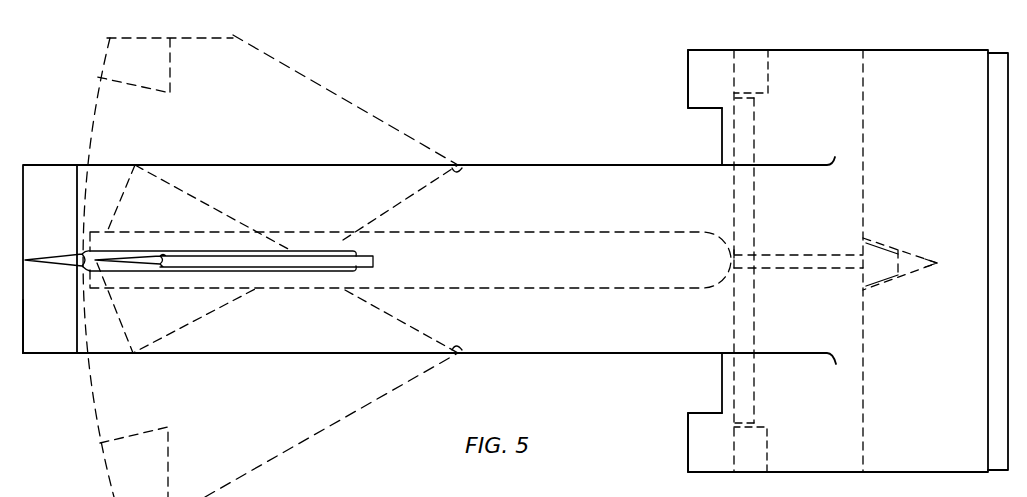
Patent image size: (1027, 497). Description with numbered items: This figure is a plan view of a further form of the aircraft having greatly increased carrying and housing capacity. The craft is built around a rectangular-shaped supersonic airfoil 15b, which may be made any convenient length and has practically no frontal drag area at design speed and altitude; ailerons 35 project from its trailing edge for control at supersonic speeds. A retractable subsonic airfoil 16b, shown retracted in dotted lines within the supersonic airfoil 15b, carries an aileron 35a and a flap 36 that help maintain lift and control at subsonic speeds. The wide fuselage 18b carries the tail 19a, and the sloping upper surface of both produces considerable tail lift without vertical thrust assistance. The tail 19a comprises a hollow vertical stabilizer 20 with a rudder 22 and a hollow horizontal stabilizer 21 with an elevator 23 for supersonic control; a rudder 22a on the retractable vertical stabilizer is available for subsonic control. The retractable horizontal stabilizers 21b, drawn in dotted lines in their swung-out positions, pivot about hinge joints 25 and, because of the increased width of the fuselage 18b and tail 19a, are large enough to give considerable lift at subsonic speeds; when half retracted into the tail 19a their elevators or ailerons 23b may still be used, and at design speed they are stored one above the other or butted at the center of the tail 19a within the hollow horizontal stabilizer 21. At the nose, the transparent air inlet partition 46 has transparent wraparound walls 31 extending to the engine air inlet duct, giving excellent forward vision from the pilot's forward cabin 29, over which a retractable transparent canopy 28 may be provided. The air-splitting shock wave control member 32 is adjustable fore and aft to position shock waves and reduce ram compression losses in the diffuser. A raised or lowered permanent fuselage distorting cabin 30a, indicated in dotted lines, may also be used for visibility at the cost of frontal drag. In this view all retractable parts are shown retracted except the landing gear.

The rectangular-shaped supersonic airfoil 15b is at (952, 54).
The retractable subsonic airfoil 16b is at (863, 109).
The fuselage 18b is at (585, 355).
The tail 19a is at (318, 204).
The hollow vertical stabilizer 20 is at (226, 252).
The hollow horizontal stabilizer 21 is at (266, 356).
The retractable horizontal stabilizer 21b is at (335, 97).
The rudder 22 is at (64, 253).
The rudder 22a is at (157, 255).
The elevator 23 is at (60, 356).
The elevator or aileron 23b is at (100, 60).
The hinge joint 25 is at (455, 170).
The retractable transparent canopy 28 is at (876, 242).
The pilot's forward cabin 29 is at (884, 286).
The fuselage distorting cabin 30a is at (590, 241).
The transparent wraparound wall 31 is at (915, 252).
The shock wave control member 32 is at (988, 428).
The aileron 35 is at (688, 72).
The aileron 35a is at (770, 72).
The flap 36 is at (734, 378).
The air inlet partition 46 is at (938, 264).